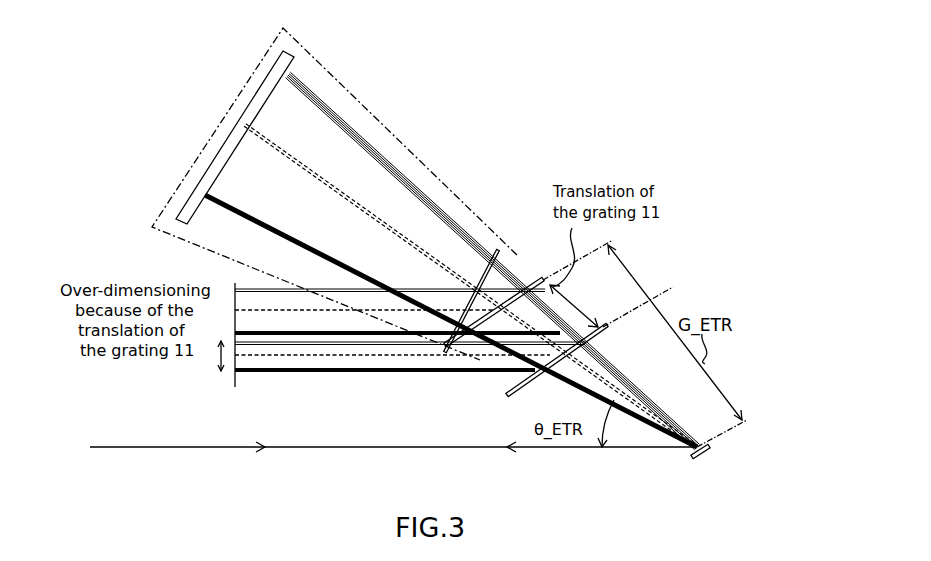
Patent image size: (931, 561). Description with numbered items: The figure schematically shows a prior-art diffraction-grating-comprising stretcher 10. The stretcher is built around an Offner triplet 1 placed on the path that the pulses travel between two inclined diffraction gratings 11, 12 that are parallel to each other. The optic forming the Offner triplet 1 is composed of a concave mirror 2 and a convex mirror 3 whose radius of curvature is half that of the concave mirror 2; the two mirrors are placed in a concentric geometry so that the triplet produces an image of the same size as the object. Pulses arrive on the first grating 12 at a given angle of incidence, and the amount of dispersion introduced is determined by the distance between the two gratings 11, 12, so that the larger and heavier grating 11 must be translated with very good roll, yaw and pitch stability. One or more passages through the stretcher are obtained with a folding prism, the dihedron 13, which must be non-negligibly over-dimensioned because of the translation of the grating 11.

The Offner triplet 1 is at (400, 138).
The concave mirror 2 is at (293, 56).
The convex mirror 3 is at (502, 262).
The stretcher 10 is at (553, 94).
The grating 11 is at (507, 395).
The first grating 12 is at (703, 458).
The dihedron 13 is at (240, 387).